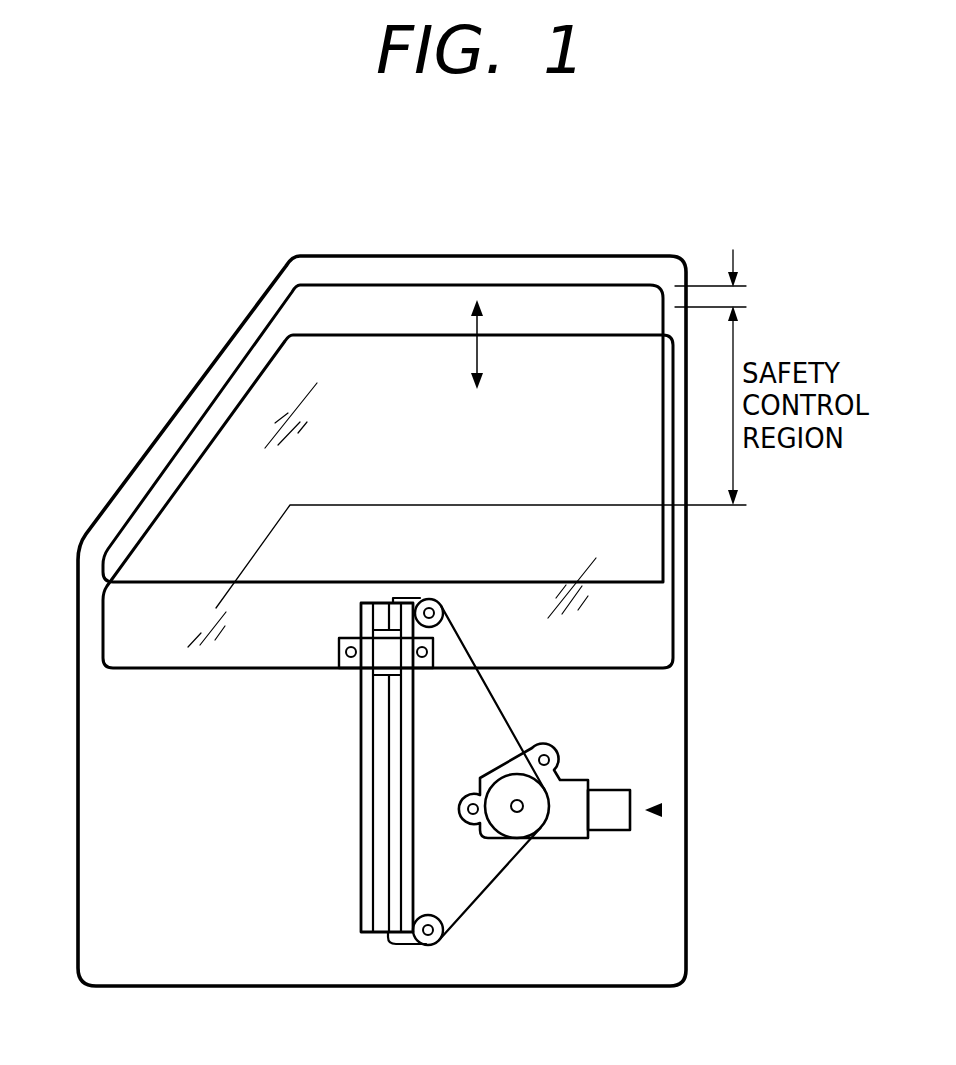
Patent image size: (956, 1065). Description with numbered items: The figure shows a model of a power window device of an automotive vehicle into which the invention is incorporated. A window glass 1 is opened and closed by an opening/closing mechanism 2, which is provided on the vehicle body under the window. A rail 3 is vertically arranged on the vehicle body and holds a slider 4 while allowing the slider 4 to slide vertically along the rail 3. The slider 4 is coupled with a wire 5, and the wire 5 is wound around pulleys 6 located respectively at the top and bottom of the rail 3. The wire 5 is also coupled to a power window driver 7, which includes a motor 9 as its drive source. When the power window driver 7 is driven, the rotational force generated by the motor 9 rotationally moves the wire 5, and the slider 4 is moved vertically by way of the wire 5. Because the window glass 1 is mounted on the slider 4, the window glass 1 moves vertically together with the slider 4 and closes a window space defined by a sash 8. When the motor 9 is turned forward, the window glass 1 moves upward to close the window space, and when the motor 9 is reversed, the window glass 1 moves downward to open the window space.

The window glass 1 is at (657, 630).
The opening/closing mechanism 2 is at (660, 810).
The rail 3 is at (371, 888).
The slider 4 is at (346, 665).
The wire 5 is at (482, 897).
The pulleys 6 is at (430, 612).
The power window driver 7 is at (567, 832).
The sash 8 is at (413, 256).
The motor 9 is at (608, 797).